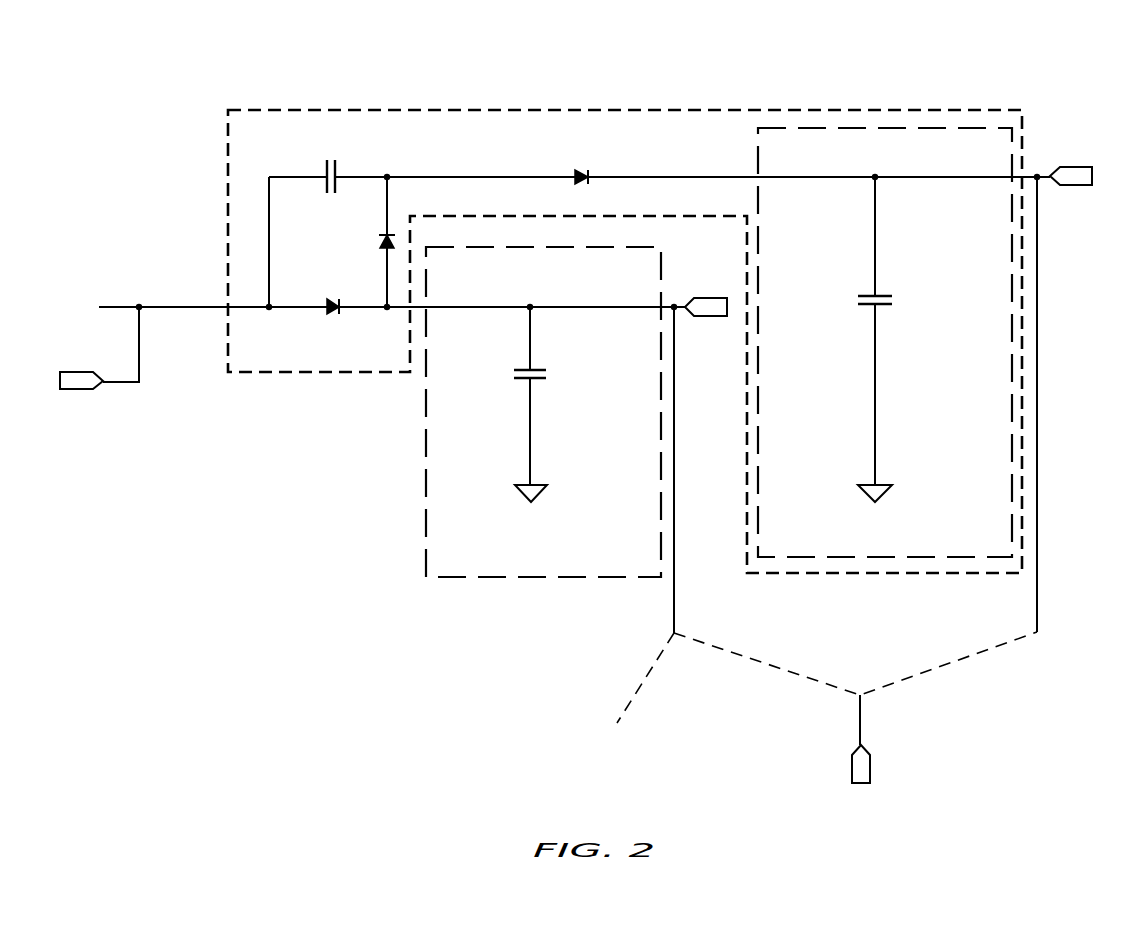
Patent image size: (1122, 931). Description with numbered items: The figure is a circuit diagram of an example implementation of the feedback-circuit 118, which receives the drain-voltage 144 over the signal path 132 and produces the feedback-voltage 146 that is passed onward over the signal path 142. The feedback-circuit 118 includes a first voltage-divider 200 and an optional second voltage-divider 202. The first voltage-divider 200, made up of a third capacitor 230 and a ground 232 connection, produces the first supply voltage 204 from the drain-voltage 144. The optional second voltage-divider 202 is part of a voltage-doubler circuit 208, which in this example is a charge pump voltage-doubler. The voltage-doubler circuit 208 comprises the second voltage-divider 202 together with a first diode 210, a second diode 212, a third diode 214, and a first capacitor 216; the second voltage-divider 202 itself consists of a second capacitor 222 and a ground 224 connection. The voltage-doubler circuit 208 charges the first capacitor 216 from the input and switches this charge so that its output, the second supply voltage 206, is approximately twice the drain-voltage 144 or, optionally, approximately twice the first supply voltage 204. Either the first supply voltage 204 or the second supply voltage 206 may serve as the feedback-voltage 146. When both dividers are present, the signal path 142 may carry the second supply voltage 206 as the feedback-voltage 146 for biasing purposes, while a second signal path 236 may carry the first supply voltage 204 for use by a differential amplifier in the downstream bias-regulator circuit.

The feedback-circuit 118 is at (878, 62).
The signal path 132 is at (113, 303).
The drain-voltage 144 is at (87, 395).
The voltage-doubler circuit 208 is at (277, 140).
The first capacitor C1 216 is at (338, 165).
The second diode D2 212 is at (378, 240).
The first diode D1 210 is at (330, 315).
The third diode D3 214 is at (581, 170).
The first supply voltage VCC 204 is at (702, 305).
The second supply voltage VDD 206 is at (1080, 170).
The first voltage-divider 200 is at (488, 565).
The third capacitor C3 230 is at (521, 380).
The ground 232 is at (537, 498).
The second voltage-divider 202 is at (807, 550).
The second capacitor C2 222 is at (866, 306).
The ground 224 is at (877, 498).
The second signal path 236 is at (648, 675).
The signal path 142 is at (862, 718).
The feedback-voltage 146 is at (862, 782).